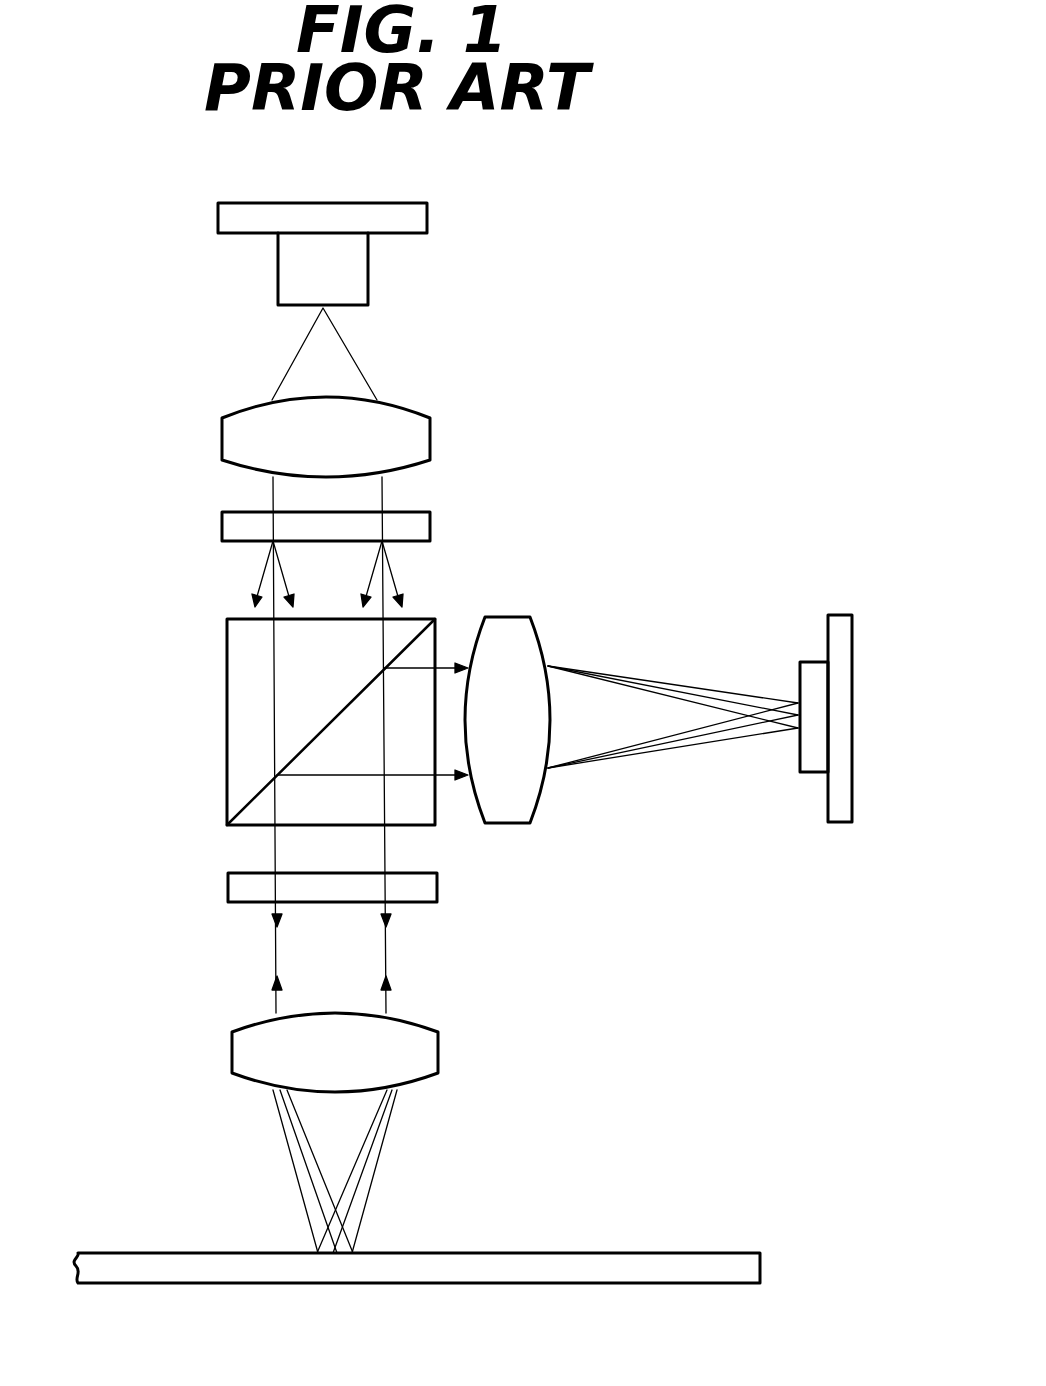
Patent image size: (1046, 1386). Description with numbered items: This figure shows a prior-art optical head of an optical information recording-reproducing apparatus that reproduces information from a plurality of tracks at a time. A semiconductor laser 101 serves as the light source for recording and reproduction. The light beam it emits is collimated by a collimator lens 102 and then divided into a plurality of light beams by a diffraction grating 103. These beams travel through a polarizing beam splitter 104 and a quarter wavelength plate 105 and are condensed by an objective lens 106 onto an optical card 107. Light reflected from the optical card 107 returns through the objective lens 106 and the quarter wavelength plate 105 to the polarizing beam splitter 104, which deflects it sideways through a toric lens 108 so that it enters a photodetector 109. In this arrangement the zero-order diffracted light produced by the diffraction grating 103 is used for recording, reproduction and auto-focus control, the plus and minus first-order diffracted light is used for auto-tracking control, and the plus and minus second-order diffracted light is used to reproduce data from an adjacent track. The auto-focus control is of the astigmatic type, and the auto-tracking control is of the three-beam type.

The semiconductor laser 101 is at (393, 203).
The collimator lens 102 is at (420, 410).
The diffraction grating 103 is at (417, 511).
The polarizing beam splitter 104 is at (226, 638).
The quarter wavelength plate 105 is at (228, 880).
The objective lens 106 is at (232, 1040).
The optical card 107 is at (702, 1252).
The toric lens 108 is at (517, 617).
The photodetector 109 is at (845, 613).